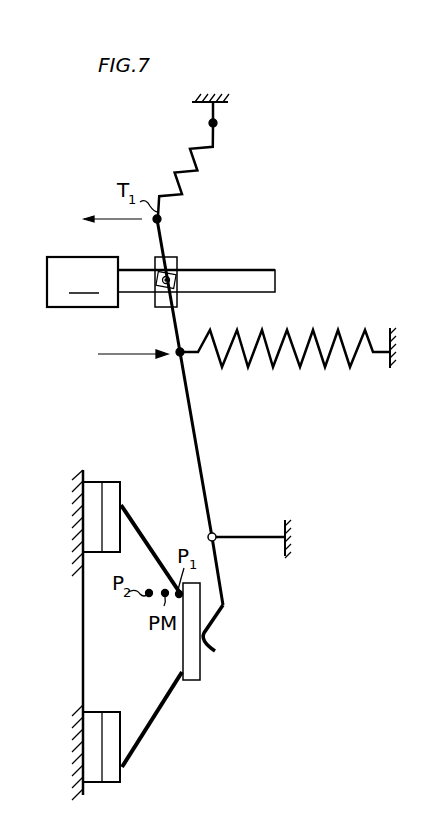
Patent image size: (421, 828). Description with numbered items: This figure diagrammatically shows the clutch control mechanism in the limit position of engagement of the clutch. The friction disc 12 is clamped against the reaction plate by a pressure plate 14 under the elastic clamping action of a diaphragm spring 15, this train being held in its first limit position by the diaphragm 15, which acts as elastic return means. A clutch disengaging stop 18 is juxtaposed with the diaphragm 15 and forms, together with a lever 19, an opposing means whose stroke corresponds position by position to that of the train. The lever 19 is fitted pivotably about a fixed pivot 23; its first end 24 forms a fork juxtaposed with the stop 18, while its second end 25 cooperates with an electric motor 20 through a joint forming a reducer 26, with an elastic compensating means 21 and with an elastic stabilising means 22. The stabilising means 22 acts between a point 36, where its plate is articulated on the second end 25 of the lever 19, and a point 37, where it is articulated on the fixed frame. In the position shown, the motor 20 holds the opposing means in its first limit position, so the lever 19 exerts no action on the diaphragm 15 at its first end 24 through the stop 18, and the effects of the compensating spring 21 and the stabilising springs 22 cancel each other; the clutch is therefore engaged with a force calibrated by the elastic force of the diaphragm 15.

The articulation point 37 is at (222, 121).
The elastic stabilising means 22 is at (207, 151).
The articulation point 36 is at (167, 217).
The second end of the lever 25 is at (175, 247).
The electric motor 20 is at (161, 282).
The reducer 26 is at (157, 300).
The lever 19 is at (197, 423).
The elastic compensating means 21 is at (314, 332).
The fixed pivot 23 is at (216, 534).
The friction disc 12 is at (97, 487).
The pressure plate 14 is at (113, 772).
The diaphragm spring 15 is at (137, 520).
The clutch disengaging stop 18 is at (200, 680).
The first end of the lever 24 is at (208, 637).